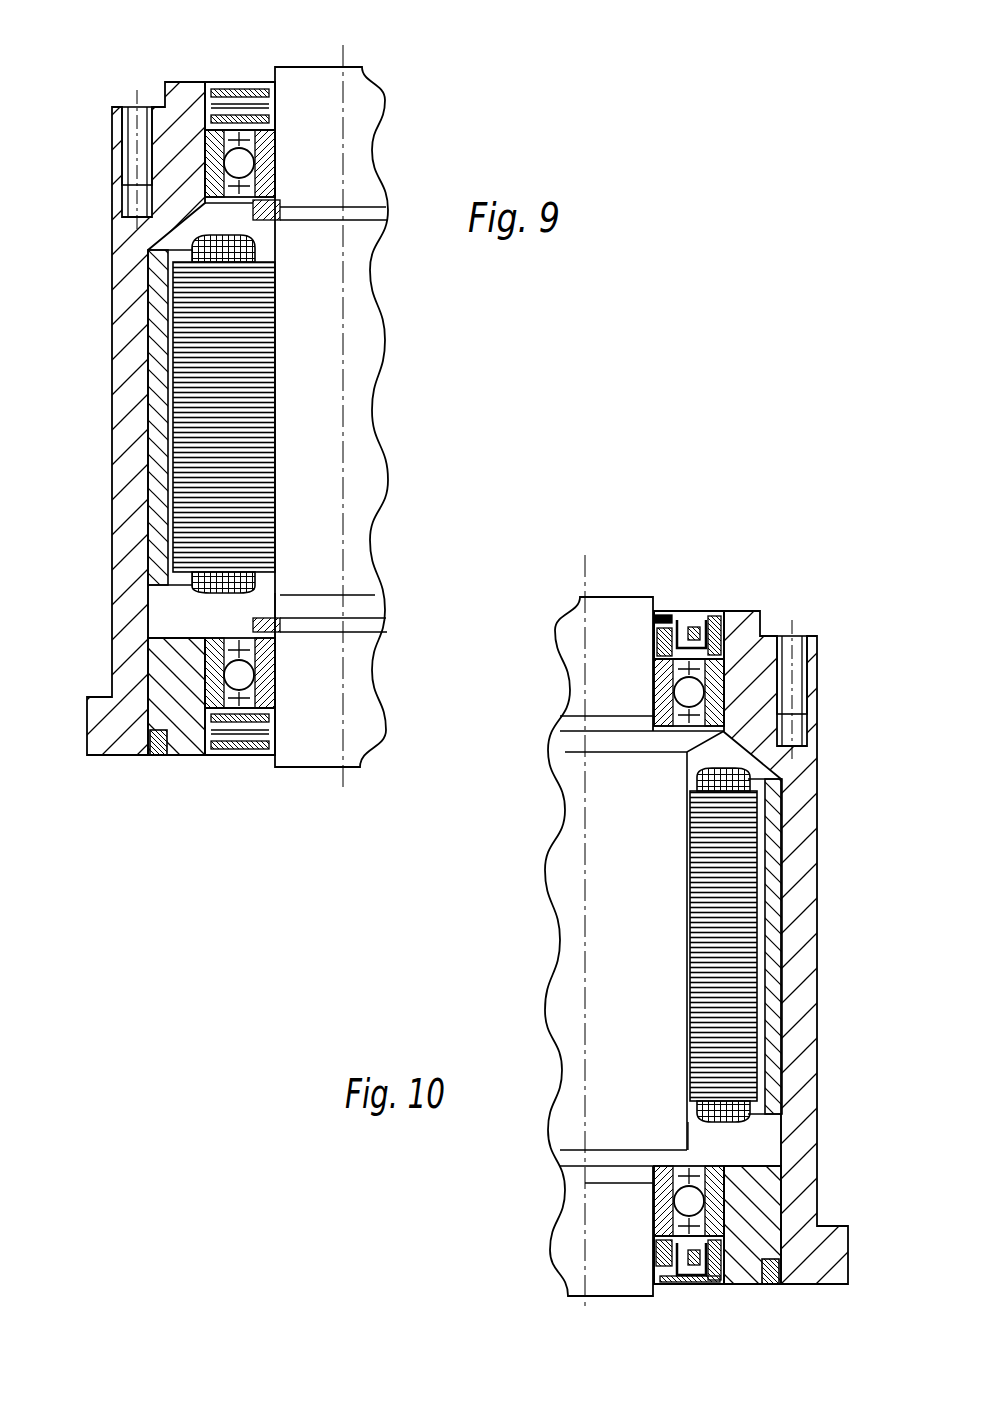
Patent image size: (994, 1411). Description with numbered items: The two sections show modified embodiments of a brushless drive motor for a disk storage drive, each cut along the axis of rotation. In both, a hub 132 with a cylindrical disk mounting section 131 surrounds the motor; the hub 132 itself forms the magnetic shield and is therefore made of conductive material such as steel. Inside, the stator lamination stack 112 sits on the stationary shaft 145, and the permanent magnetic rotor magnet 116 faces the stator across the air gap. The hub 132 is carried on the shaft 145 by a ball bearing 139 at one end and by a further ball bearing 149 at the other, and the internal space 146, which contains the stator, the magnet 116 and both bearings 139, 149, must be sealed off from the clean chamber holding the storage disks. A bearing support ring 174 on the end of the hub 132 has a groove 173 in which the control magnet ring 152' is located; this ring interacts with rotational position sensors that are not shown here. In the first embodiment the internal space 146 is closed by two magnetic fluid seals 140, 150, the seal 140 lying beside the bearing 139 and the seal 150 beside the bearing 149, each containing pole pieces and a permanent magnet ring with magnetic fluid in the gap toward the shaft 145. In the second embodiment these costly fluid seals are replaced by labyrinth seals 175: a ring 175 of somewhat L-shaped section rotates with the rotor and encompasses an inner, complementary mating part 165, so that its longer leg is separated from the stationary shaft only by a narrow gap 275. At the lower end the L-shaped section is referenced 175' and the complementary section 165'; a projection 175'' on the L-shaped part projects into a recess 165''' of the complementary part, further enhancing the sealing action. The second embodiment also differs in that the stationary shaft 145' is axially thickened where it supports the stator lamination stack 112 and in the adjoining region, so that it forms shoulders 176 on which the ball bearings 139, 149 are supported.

In FIG. 9, the stator lamination stack 112 is at (172, 330).
In FIG. 10, the stator lamination stack 112 is at (754, 842).
In FIG. 9, the rotor magnet 116 is at (152, 388).
In FIG. 10, the rotor magnet 116 is at (770, 915).
In FIG. 9, the disk mounting section 131 is at (112, 262).
In FIG. 9, the hub 132 is at (118, 517).
In FIG. 9, the ball bearing 139 is at (278, 143).
In FIG. 10, the ball bearing 139 is at (724, 667).
In FIG. 9, the magnetic fluid seal 140 is at (235, 83).
In FIG. 9, the stationary shaft 145 is at (352, 417).
In FIG. 10, the stationary shaft 145' is at (593, 932).
In FIG. 9, the internal space 146 is at (262, 603).
In FIG. 10, the internal space 146 is at (760, 1140).
In FIG. 9, the ball bearing 149 is at (255, 672).
In FIG. 10, the ball bearing 149 is at (650, 1213).
In FIG. 9, the magnetic fluid seal 150 is at (250, 757).
In FIG. 9, the control magnet ring 152' is at (132, 774).
In FIG. 10, the control magnet ring 152' is at (808, 1297).
In FIG. 10, the mating part 165 is at (584, 642).
In FIG. 10, the complementary mating section 165' is at (570, 1252).
In FIG. 10, the recess 165''' is at (570, 1313).
In FIG. 9, the groove 173 is at (190, 757).
In FIG. 10, the groove 173 is at (750, 1286).
In FIG. 9, the bearing support ring 174 is at (160, 660).
In FIG. 10, the bearing support ring 174 is at (752, 1197).
In FIG. 10, the labyrinth seal ring 175 is at (741, 594).
In FIG. 10, the labyrinth seal section 175' is at (679, 1307).
In FIG. 10, the projection 175'' is at (617, 1309).
In FIG. 10, the shoulders 176 is at (656, 722).
In FIG. 10, the narrow gap 275 is at (655, 608).